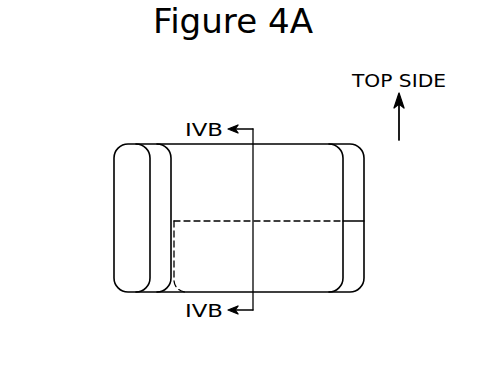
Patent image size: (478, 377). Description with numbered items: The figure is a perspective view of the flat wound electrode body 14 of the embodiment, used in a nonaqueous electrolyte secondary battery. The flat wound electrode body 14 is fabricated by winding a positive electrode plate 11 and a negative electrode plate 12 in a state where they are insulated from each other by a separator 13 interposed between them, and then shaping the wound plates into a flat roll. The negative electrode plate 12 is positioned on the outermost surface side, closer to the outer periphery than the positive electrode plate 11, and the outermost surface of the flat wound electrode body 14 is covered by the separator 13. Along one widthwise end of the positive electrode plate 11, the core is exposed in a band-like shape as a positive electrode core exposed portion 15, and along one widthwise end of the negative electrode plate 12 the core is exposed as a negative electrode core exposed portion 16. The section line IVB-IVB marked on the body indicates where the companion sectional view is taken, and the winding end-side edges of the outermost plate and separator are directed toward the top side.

The positive electrode plate 11 is at (352, 264).
The negative electrode plate 12 is at (156, 257).
The separator 13 is at (197, 182).
The flat wound electrode body 14 is at (365, 198).
The positive electrode core exposed portion 15 is at (355, 245).
The negative electrode core exposed portion 16 is at (159, 220).